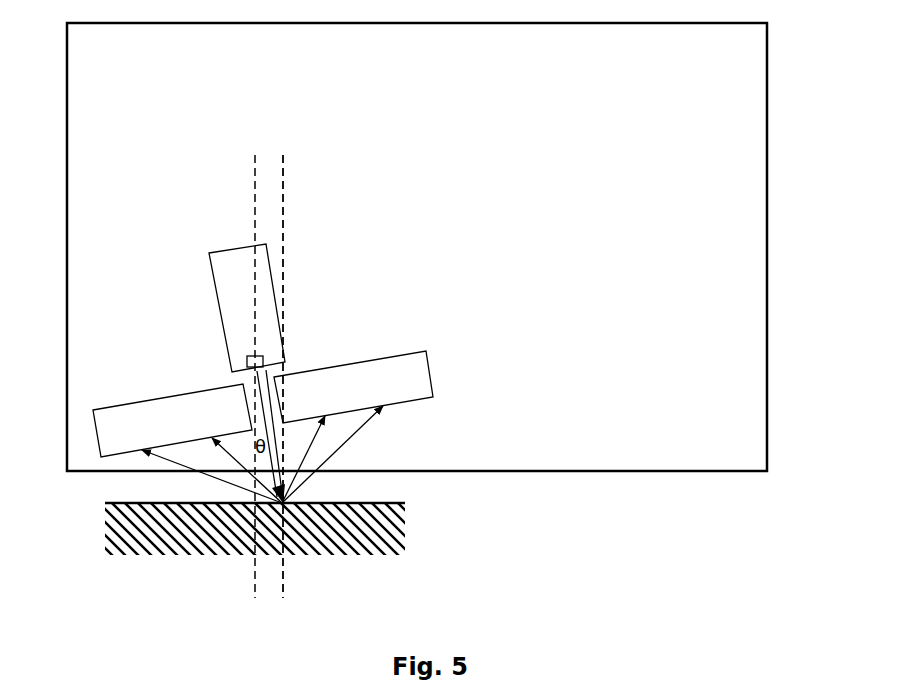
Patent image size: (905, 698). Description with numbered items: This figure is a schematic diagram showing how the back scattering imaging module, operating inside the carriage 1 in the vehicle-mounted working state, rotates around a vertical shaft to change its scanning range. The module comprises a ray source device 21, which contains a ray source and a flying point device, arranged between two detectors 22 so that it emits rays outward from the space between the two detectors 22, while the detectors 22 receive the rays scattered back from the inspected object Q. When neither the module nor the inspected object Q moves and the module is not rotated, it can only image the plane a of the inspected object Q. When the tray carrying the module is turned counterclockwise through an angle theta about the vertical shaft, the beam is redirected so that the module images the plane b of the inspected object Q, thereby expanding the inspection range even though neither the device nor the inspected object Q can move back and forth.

The carriage 1 is at (747, 292).
The ray source device 21 is at (255, 262).
The detector 22 is at (128, 428).
The inspected object Q is at (405, 527).
The plane a is at (253, 390).
The plane b is at (280, 390).